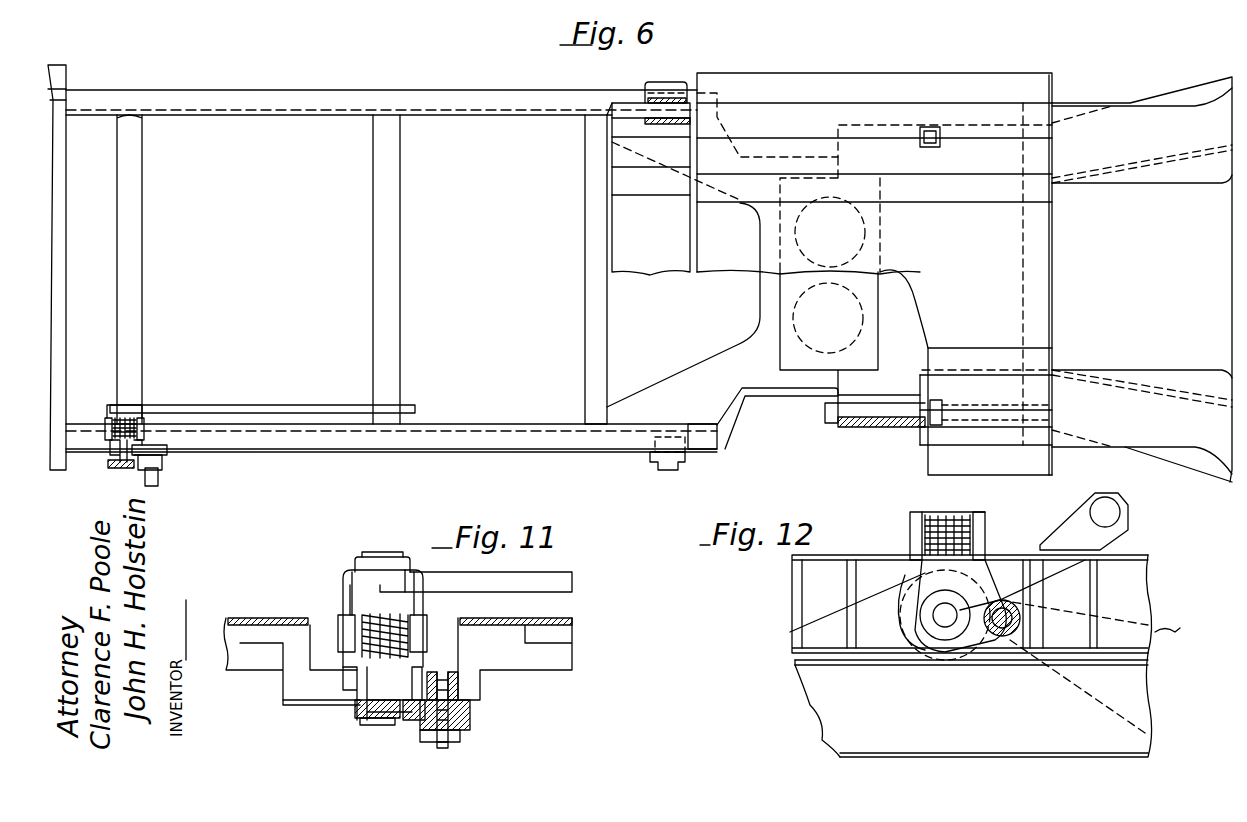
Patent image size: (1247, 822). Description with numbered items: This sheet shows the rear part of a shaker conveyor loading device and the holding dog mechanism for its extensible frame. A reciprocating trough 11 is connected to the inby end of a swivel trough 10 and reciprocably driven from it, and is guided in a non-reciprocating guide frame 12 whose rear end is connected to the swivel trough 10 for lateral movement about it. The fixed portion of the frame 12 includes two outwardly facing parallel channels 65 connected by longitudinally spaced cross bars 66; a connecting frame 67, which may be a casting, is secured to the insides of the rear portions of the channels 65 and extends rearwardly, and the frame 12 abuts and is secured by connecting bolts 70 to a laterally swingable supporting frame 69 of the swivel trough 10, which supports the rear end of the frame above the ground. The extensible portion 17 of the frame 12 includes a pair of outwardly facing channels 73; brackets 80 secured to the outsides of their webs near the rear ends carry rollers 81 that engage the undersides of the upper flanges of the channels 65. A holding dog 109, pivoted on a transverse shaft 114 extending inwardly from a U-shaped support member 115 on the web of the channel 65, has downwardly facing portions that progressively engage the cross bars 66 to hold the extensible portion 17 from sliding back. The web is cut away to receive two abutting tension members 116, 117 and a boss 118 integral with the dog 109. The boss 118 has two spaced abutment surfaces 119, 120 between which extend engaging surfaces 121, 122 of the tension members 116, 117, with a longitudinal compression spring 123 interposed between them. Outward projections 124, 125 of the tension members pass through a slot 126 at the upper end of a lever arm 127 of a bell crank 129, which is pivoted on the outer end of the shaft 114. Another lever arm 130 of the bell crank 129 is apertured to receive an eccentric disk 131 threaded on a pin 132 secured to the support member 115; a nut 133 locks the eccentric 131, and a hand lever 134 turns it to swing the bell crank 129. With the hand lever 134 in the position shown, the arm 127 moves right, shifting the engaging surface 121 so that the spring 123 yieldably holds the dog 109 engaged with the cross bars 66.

In FIG. 6, the swivel trough 10 is at (1213, 468).
In FIG. 6, the reciprocating trough 11 is at (1046, 104).
In FIG. 6, the guide frame 12 is at (595, 452).
In FIG. 12, the guide frame 12 is at (808, 700).
In FIG. 6, the extensible portion of the frame 17 is at (228, 443).
In FIG. 11, the extensible portion of the frame 17 is at (243, 672).
In FIG. 12, the extensible portion of the frame 17 is at (800, 598).
In FIG. 6, the channels 65 is at (506, 100).
In FIG. 12, the channels 65 is at (800, 675).
In FIG. 6, the cross bars 66 is at (373, 330).
In FIG. 6, the connecting frame 67 is at (748, 405).
In FIG. 6, the supporting frame 69 is at (910, 434).
In FIG. 6, the connecting bolts 70 is at (826, 425).
In FIG. 6, the channels 73 is at (210, 100).
In FIG. 6, the brackets 80 is at (684, 466).
In FIG. 6, the rollers 81 is at (652, 455).
In FIG. 6, the holding dog 109 is at (310, 403).
In FIG. 11, the holding dog 109 is at (545, 575).
In FIG. 12, the holding dog 109 is at (1185, 632).
In FIG. 11, the transverse shaft 114 is at (356, 565).
In FIG. 12, the transverse shaft 114 is at (938, 628).
In FIG. 6, the support member 115 is at (110, 458).
In FIG. 11, the support member 115 is at (300, 705).
In FIG. 11, the tension member 116 is at (421, 663).
In FIG. 11, the tension member 117 is at (352, 668).
In FIG. 11, the boss 118 is at (350, 612).
In FIG. 6, the abutment surface 119 is at (108, 420).
In FIG. 11, the abutment surface 119 is at (427, 612).
In FIG. 12, the abutment surface 119 is at (990, 525).
In FIG. 6, the abutment surface 120 is at (142, 420).
In FIG. 11, the abutment surface 120 is at (338, 612).
In FIG. 12, the abutment surface 120 is at (910, 530).
In FIG. 11, the engaging surface 121 is at (348, 612).
In FIG. 12, the engaging surface 121 is at (922, 520).
In FIG. 11, the engaging surface 122 is at (412, 578).
In FIG. 12, the engaging surface 122 is at (972, 518).
In FIG. 6, the compression spring 123 is at (128, 412).
In FIG. 11, the compression spring 123 is at (412, 612).
In FIG. 12, the compression spring 123 is at (962, 518).
In FIG. 11, the outward projection 124 is at (412, 722).
In FIG. 6, the outward projection 125 is at (110, 470).
In FIG. 11, the outward projection 125 is at (360, 703).
In FIG. 12, the outward projection 125 is at (925, 540).
In FIG. 6, the slot 126 is at (170, 462).
In FIG. 11, the slot 126 is at (378, 728).
In FIG. 12, the slot 126 is at (942, 515).
In FIG. 6, the lever arm 127 is at (136, 460).
In FIG. 11, the lever arm 127 is at (362, 720).
In FIG. 12, the lever arm 127 is at (790, 632).
In FIG. 12, the bell crank 129 is at (922, 630).
In FIG. 6, the lever arm 130 is at (160, 462).
In FIG. 11, the lever arm 130 is at (465, 708).
In FIG. 12, the lever arm 130 is at (1000, 640).
In FIG. 11, the eccentric disk 131 is at (472, 720).
In FIG. 12, the eccentric disk 131 is at (1008, 640).
In FIG. 11, the pin 132 is at (446, 750).
In FIG. 11, the nut 133 is at (462, 738).
In FIG. 6, the hand lever 134 is at (160, 480).
In FIG. 12, the hand lever 134 is at (1060, 540).